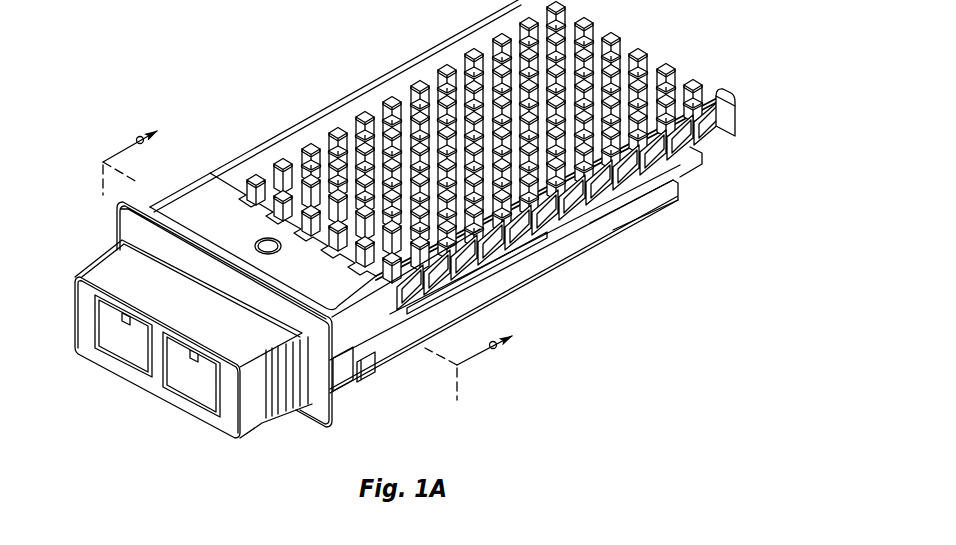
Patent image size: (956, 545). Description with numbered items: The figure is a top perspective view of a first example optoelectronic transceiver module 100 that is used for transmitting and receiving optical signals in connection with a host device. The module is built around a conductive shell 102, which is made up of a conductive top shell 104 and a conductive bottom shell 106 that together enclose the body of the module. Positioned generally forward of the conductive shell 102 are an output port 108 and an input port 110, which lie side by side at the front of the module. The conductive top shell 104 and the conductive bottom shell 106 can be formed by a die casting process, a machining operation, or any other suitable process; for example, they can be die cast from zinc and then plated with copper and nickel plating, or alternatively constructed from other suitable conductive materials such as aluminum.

The optoelectronic transceiver module 100 is at (433, 231).
The conductive shell 102 is at (516, 198).
The conductive top shell 104 is at (721, 95).
The conductive bottom shell 106 is at (684, 203).
The output port 108 is at (138, 345).
The input port 110 is at (203, 383).